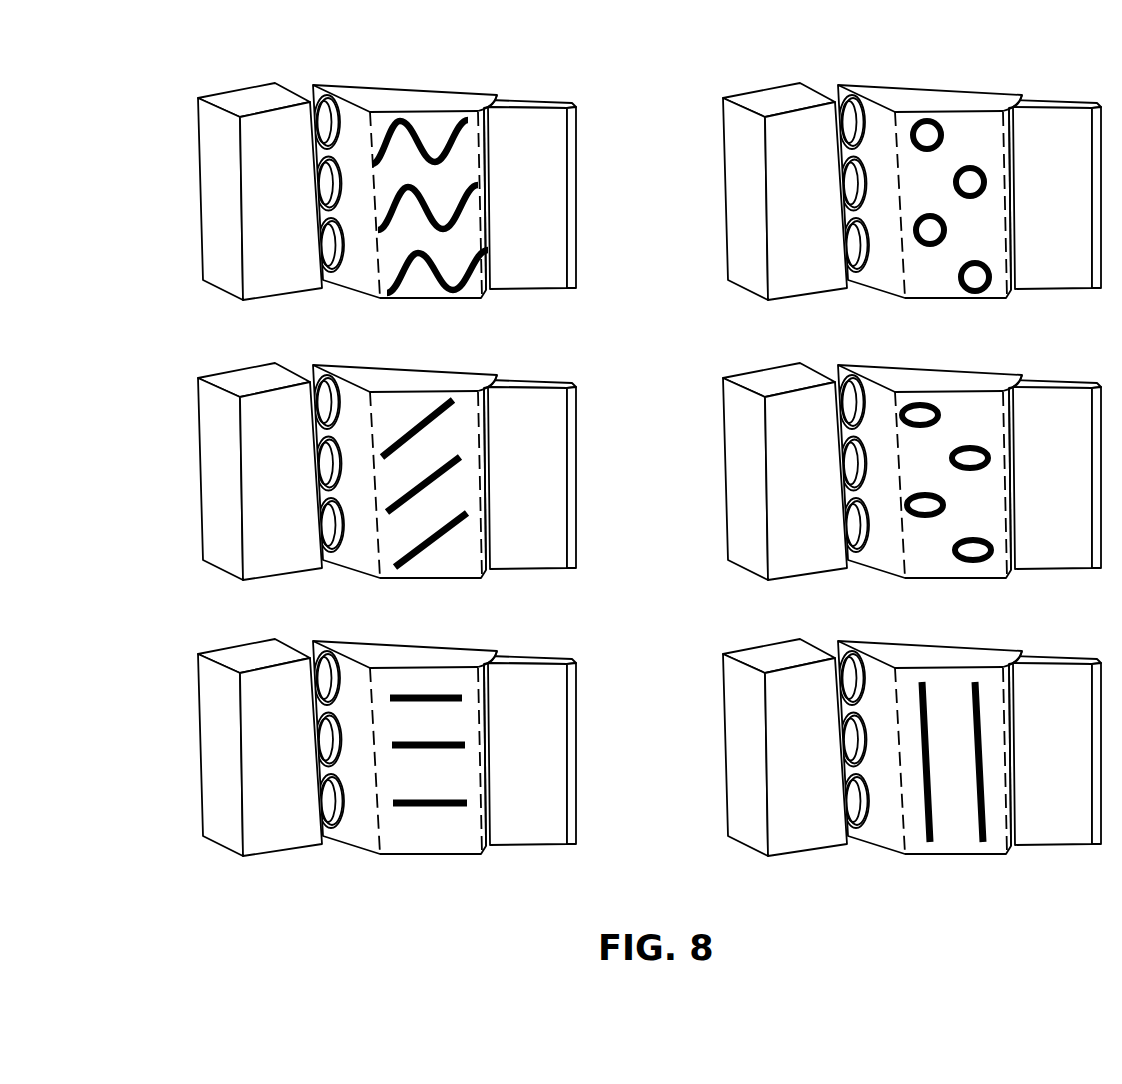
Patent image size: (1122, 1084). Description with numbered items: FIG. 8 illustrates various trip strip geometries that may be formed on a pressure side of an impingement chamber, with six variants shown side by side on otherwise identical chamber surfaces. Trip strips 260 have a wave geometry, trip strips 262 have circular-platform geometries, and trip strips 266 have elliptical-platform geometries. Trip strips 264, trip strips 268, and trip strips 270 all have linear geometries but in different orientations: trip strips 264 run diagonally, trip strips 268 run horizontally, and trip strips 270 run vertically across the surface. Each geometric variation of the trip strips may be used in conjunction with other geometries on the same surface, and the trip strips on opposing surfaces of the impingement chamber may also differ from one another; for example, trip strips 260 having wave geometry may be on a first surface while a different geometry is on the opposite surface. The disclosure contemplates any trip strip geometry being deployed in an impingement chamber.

The trip strips 260 is at (467, 117).
The trip strips 262 is at (927, 119).
The trip strips 264 is at (447, 397).
The trip strips 266 is at (930, 401).
The trip strips 268 is at (445, 694).
The trip strips 270 is at (978, 680).